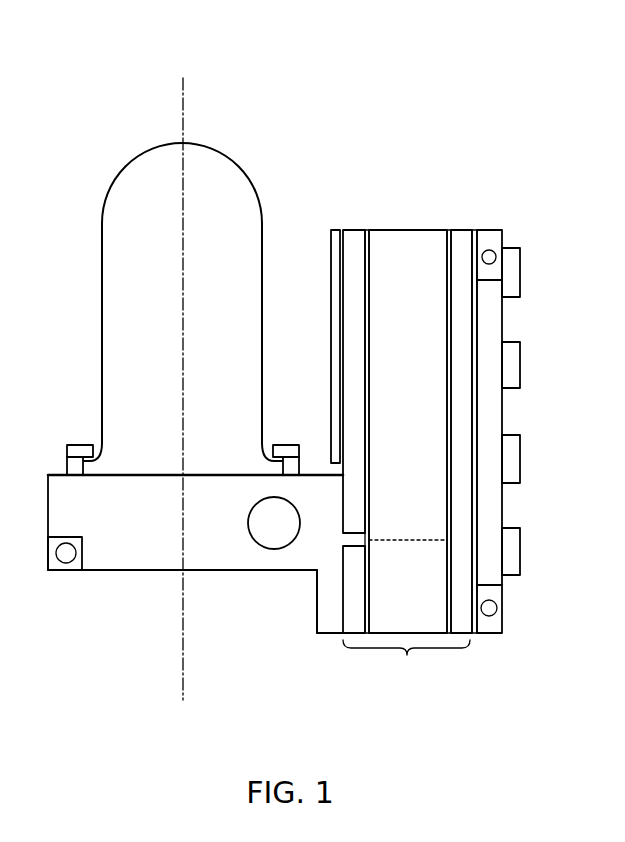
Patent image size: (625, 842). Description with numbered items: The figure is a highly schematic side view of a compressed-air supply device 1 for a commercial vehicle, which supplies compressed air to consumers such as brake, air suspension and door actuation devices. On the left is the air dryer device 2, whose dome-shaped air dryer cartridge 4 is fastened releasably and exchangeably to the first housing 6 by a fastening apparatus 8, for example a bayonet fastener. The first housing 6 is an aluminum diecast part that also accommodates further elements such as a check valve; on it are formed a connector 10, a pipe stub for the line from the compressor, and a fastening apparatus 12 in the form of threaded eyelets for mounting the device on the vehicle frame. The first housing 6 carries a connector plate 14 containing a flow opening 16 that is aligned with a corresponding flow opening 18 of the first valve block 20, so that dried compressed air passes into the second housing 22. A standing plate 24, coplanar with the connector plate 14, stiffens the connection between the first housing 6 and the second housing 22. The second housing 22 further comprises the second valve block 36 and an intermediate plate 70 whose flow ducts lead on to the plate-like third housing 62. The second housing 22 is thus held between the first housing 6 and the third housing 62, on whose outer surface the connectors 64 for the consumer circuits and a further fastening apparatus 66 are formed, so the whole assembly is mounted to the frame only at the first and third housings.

The compressed-air supply device 1 is at (246, 152).
The air dryer device 2 is at (222, 572).
The air dryer cartridge 4 is at (137, 174).
The first housing 6 is at (137, 560).
The fastening apparatus 8 is at (78, 448).
The connector 10 is at (277, 541).
The fastening apparatus 12 is at (66, 564).
The connector plate 14 is at (327, 636).
The flow opening 16 is at (342, 537).
The flow opening 18 is at (368, 537).
The first valve block 20 is at (352, 234).
The second housing 22 is at (406, 665).
The standing plate 24 is at (335, 285).
The second valve block 36 is at (413, 238).
The third housing 62 is at (492, 319).
The connectors 64 is at (515, 271).
The fastening apparatus 66 is at (497, 609).
The intermediate plate 70 is at (458, 236).